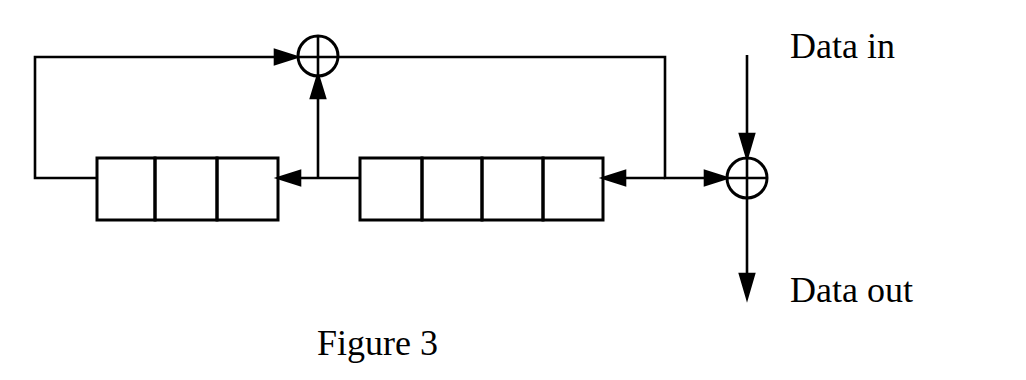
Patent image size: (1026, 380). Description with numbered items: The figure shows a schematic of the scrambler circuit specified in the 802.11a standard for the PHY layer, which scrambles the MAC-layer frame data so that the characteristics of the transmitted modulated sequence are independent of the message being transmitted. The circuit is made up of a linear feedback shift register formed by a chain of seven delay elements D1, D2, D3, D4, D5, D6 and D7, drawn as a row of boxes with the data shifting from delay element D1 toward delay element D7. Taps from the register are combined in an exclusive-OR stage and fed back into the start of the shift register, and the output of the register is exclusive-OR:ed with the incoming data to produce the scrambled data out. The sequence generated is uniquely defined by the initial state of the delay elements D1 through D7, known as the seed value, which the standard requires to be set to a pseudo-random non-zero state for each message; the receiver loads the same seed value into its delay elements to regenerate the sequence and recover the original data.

The delay element D1 is at (573, 189).
The delay element D2 is at (512, 189).
The delay element D3 is at (452, 189).
The delay element D4 is at (391, 189).
The delay element D5 is at (247, 189).
The delay element D6 is at (186, 189).
The delay element D7 is at (126, 189).